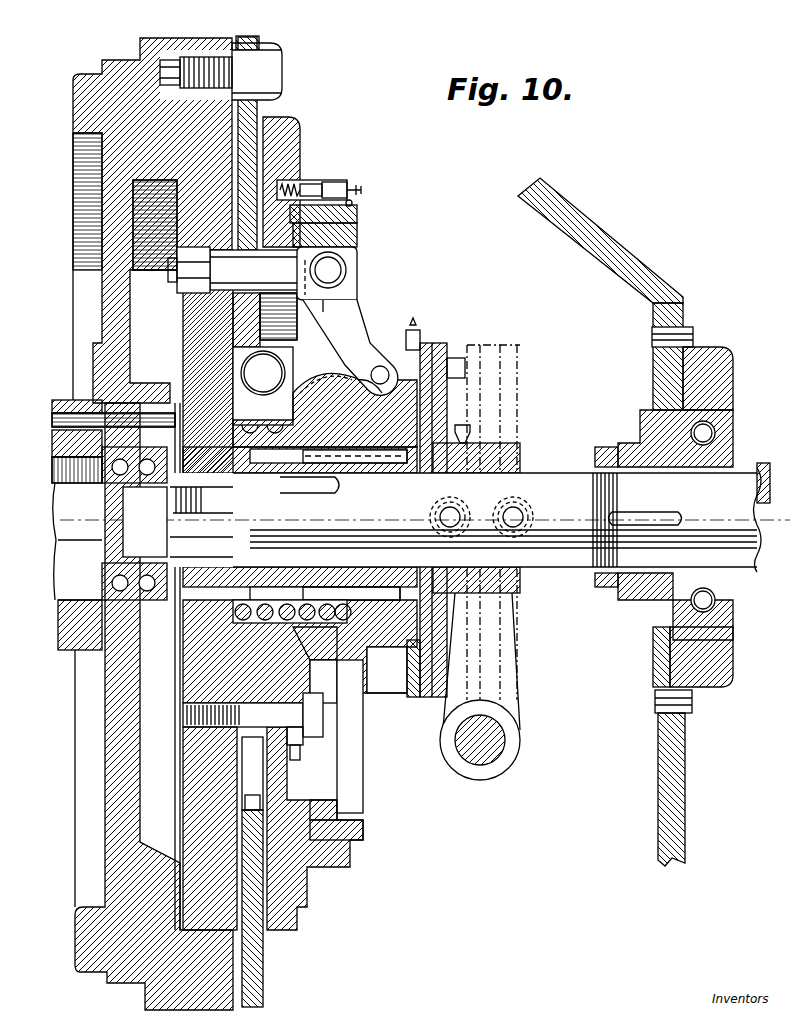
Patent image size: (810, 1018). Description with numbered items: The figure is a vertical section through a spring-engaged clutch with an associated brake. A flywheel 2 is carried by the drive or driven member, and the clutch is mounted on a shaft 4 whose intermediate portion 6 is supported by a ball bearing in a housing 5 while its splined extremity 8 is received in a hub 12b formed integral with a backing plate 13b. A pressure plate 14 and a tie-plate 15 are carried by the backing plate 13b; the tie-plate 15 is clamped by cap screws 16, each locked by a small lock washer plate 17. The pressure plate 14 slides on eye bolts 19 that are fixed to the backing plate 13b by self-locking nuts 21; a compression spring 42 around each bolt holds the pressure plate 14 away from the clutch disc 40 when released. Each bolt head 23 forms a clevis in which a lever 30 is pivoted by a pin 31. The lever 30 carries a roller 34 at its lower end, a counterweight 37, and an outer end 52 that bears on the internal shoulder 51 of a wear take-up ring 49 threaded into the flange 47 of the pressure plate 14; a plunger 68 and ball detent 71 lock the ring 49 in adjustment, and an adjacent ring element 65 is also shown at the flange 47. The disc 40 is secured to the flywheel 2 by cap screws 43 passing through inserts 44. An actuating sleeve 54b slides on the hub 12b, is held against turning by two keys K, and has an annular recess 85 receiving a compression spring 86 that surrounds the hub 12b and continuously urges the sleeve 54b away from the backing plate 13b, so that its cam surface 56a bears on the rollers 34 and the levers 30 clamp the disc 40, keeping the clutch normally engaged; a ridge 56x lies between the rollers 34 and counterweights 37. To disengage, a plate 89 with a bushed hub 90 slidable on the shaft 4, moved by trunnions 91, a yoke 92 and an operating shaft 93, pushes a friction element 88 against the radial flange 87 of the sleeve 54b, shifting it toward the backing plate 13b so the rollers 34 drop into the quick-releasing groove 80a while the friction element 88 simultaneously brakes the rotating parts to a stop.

The flywheel 2 is at (80, 110).
The clutch disc 40 is at (246, 37).
The cap screws 43 is at (283, 74).
The insert 44 is at (260, 122).
The pressure plate 14 is at (299, 146).
The flange 47 is at (314, 183).
The plunger 68 is at (353, 187).
The ball detent 71 is at (352, 202).
The ring 65 is at (358, 215).
The outer end of lever 52 is at (358, 240).
The pin 31 is at (344, 271).
The lever 30 is at (362, 302).
The self-locking nut 21 is at (177, 268).
The eye bolt 19 is at (272, 275).
The compression spring 42 is at (253, 303).
The bolt head 23 is at (323, 303).
The backing plate 13b is at (192, 360).
The counterweight 37 is at (270, 382).
The ridge 56x is at (345, 368).
The cam surface 56a is at (368, 356).
The roller 34 is at (406, 343).
The plate 89 is at (461, 345).
The radial flange 87 is at (476, 343).
The bushed hub 90 is at (520, 443).
The shaft 4 is at (560, 472).
The housing 5 is at (634, 262).
The trunnions 91 is at (463, 505).
The shaft extremity 8 is at (113, 500).
The hub 12b is at (363, 573).
The keys K is at (390, 580).
The intermediate portion of shaft 6 is at (652, 520).
The compression spring 86 is at (283, 622).
The groove 80a is at (380, 647).
The actuating sleeve 54b is at (369, 668).
The annular recess 85 is at (333, 655).
The friction element 88 is at (433, 697).
The yoke 92 is at (528, 657).
The operating shaft 93 is at (488, 757).
The cap screws 16 is at (183, 715).
The lock washer plate 17 is at (303, 746).
The tie-plate 15 is at (296, 760).
The internal shoulder 51 is at (340, 812).
The wear take-up ring 49 is at (365, 836).